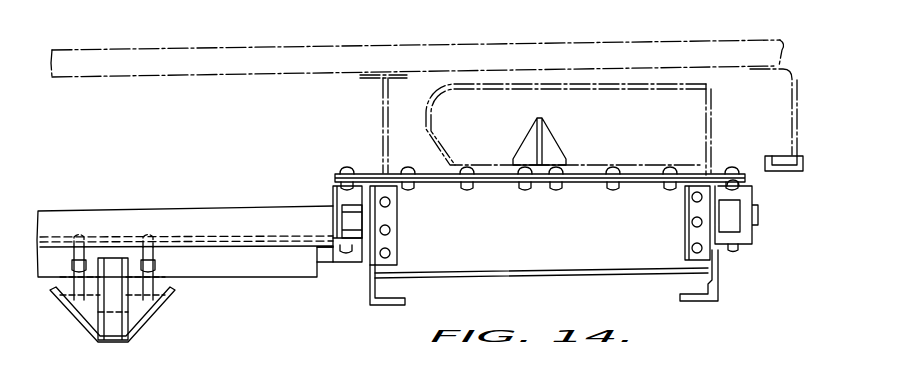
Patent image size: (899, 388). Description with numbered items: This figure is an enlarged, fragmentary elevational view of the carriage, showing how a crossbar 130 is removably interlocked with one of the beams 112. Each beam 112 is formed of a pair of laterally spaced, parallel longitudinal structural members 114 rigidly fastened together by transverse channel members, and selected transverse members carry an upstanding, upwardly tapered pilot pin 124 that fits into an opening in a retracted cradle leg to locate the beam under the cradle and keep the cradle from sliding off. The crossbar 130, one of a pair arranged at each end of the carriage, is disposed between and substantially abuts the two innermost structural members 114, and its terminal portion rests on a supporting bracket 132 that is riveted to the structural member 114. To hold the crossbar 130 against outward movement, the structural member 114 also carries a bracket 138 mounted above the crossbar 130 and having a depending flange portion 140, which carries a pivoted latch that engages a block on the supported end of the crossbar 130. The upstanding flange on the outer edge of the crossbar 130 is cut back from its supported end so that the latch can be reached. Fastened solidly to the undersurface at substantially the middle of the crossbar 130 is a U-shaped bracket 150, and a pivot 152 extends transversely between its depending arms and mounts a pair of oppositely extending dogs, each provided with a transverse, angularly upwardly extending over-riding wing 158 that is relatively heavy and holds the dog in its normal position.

The beam 112 is at (490, 285).
The longitudinal structural member 114 is at (370, 300).
The pilot pin 124 is at (544, 139).
The crossbar 130 is at (222, 248).
The supporting bracket 132 is at (348, 262).
The bracket 138 is at (334, 186).
The depending flange portion 140 is at (333, 197).
The U-shaped bracket 150 is at (118, 256).
The pivot 152 is at (140, 286).
The over-riding wing 158 is at (146, 327).